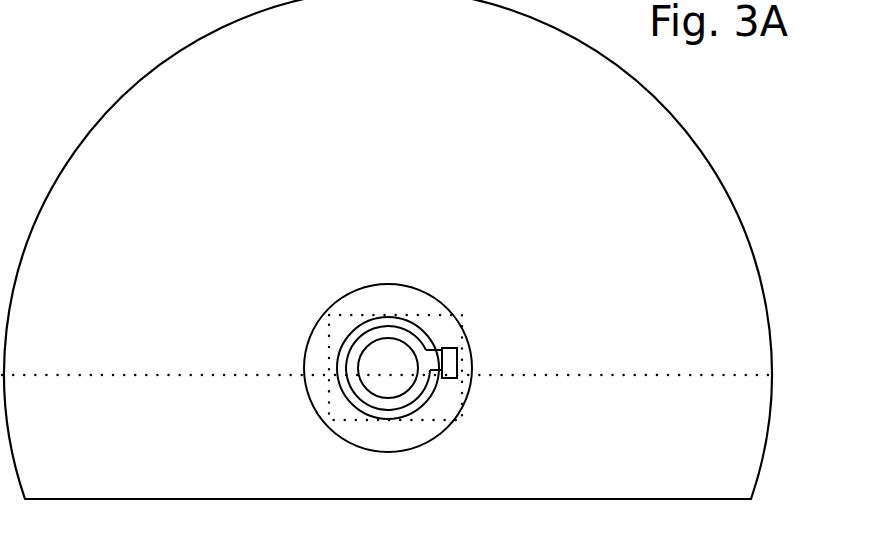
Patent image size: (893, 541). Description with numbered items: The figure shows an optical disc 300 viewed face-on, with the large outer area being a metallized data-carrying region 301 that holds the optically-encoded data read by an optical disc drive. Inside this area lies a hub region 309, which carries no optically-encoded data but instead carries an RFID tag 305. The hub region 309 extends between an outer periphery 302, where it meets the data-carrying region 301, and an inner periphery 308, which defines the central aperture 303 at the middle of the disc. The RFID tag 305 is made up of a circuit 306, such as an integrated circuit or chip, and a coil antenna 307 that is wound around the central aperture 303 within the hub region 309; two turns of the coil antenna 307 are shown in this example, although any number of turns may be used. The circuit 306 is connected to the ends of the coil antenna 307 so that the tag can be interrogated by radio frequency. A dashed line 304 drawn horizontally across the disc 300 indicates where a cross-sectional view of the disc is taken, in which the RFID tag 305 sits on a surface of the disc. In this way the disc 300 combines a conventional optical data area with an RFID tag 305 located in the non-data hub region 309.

The optical disc 300 is at (127, 40).
The data-carrying region 301 is at (385, 151).
The outer periphery 302 is at (400, 285).
The central aperture 303 is at (388, 368).
The dashed line 304 is at (701, 378).
The RFID tag 305 is at (433, 422).
The circuit 306 is at (450, 347).
The coil antenna 307 is at (92, 126).
The inner periphery 308 is at (361, 352).
The hub region 309 is at (311, 404).